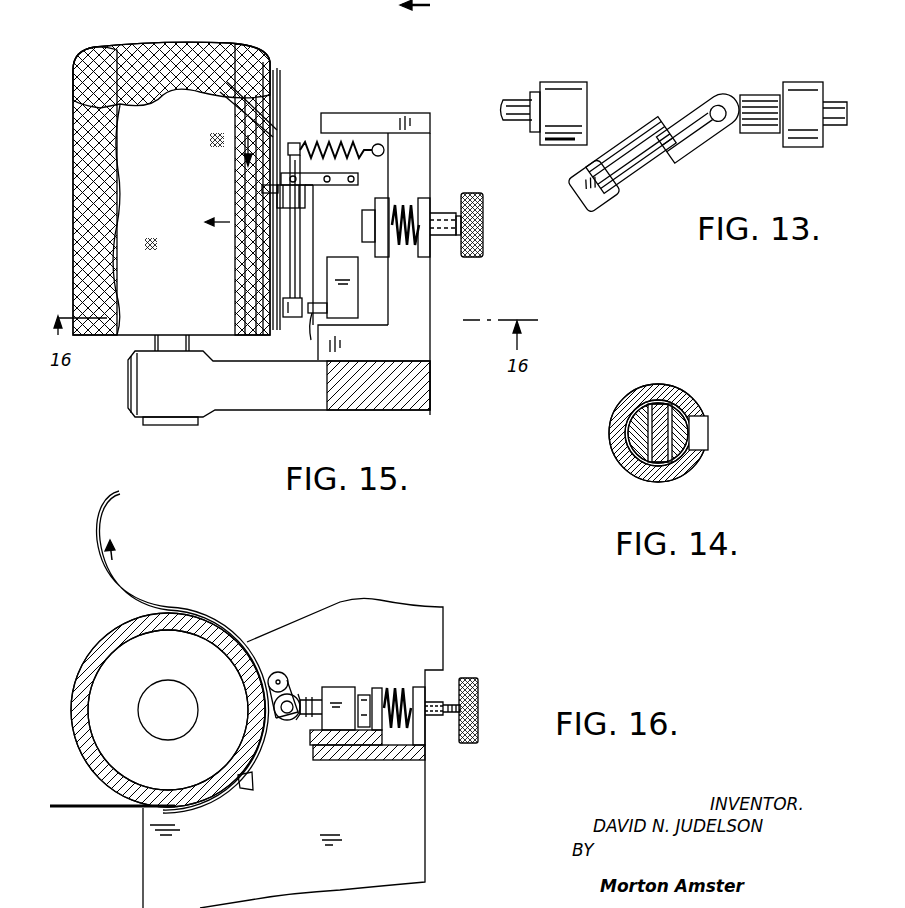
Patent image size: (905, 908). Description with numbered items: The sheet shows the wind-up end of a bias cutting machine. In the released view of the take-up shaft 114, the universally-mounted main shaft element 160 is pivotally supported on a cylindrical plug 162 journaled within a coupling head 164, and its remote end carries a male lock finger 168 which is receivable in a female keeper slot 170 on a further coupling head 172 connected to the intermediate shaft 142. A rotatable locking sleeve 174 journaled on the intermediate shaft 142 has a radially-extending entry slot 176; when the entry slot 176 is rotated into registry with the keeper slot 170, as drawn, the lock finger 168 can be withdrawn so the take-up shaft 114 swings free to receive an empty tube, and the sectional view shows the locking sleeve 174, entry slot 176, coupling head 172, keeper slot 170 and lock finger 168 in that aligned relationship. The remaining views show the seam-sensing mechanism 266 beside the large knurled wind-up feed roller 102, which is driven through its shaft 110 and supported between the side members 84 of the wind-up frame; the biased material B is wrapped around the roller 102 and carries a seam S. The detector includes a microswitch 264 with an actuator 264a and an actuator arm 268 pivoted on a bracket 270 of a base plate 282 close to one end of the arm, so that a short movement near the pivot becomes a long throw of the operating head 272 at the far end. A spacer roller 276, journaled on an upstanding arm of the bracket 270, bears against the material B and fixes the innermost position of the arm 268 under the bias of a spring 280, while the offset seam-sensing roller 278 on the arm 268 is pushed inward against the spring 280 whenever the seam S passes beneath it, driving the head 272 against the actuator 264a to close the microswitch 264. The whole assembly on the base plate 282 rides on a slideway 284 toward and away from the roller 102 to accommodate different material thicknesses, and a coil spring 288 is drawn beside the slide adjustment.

In FIG. 15, the wind-up feed roller 102 is at (263, 54).
In FIG. 16, the wind-up feed roller 102 is at (188, 622).
In FIG. 15, the biased material B is at (281, 84).
In FIG. 16, the biased material B is at (126, 595).
In FIG. 15, the seam S is at (228, 171).
In FIG. 16, the seam S is at (252, 791).
In FIG. 15, the spacer roller 276 is at (262, 190).
In FIG. 16, the spacer roller 276 is at (275, 672).
In FIG. 15, the spring 280 is at (350, 140).
In FIG. 15, the sensing mechanism 266 is at (418, 108).
In FIG. 15, the slideway 284 is at (432, 126).
In FIG. 16, the slideway 284 is at (396, 760).
In FIG. 15, the bracket 270 is at (337, 175).
In FIG. 15, the base plate 282 is at (383, 190).
In FIG. 16, the base plate 282 is at (348, 745).
In FIG. 15, the seam-sensing roller 278 is at (306, 198).
In FIG. 16, the seam-sensing roller 278 is at (274, 707).
In FIG. 15, the actuator arm 268 is at (300, 222).
In FIG. 16, the actuator arm 268 is at (286, 720).
In FIG. 15, the compression spring 288 is at (404, 247).
In FIG. 16, the compression spring 288 is at (396, 688).
In FIG. 15, the microswitch 264 is at (360, 307).
In FIG. 16, the microswitch 264 is at (338, 695).
In FIG. 15, the operating head 272 is at (290, 319).
In FIG. 16, the operating head 272 is at (296, 694).
In FIG. 15, the actuator 264a is at (330, 330).
In FIG. 16, the actuator 264a is at (312, 697).
In FIG. 15, the shaft 110 is at (152, 343).
In FIG. 16, the shaft 110 is at (155, 728).
In FIG. 15, the side members 84 is at (251, 412).
In FIG. 13, the intermediate shaft 142 is at (512, 98).
In FIG. 13, the locking sleeve 174 is at (568, 82).
In FIG. 14, the locking sleeve 174 is at (645, 385).
In FIG. 13, the entry slot 176 is at (579, 157).
In FIG. 14, the entry slot 176 is at (710, 420).
In FIG. 13, the main shaft element 160 is at (642, 140).
In FIG. 13, the male lock finger 168 is at (598, 200).
In FIG. 14, the male lock finger 168 is at (640, 458).
In FIG. 13, the take-up shaft 114 is at (690, 136).
In FIG. 13, the cylindrical plug 162 is at (767, 92).
In FIG. 13, the coupling head 164 is at (805, 82).
In FIG. 14, the coupling head 172 is at (680, 395).
In FIG. 14, the keeper slot 170 is at (645, 440).